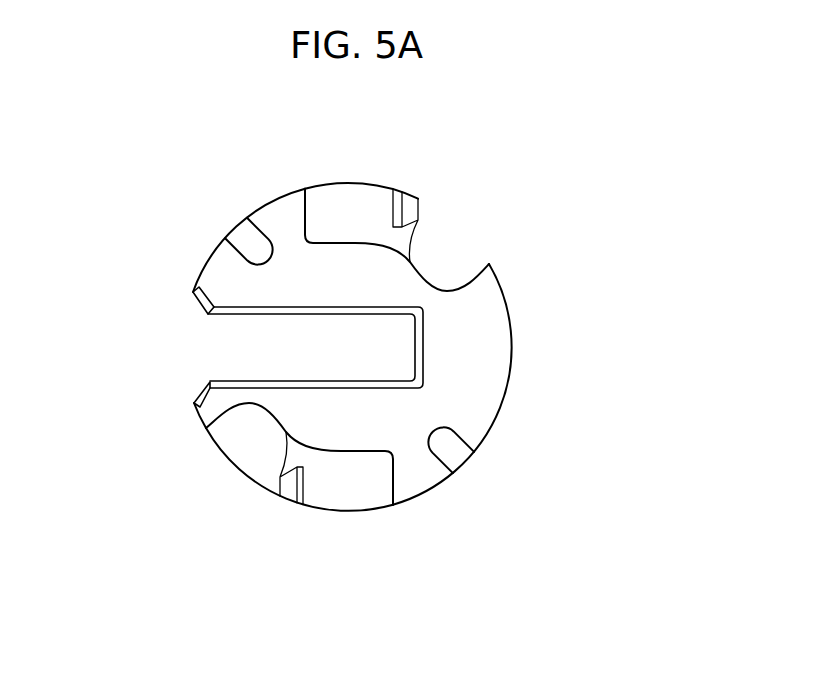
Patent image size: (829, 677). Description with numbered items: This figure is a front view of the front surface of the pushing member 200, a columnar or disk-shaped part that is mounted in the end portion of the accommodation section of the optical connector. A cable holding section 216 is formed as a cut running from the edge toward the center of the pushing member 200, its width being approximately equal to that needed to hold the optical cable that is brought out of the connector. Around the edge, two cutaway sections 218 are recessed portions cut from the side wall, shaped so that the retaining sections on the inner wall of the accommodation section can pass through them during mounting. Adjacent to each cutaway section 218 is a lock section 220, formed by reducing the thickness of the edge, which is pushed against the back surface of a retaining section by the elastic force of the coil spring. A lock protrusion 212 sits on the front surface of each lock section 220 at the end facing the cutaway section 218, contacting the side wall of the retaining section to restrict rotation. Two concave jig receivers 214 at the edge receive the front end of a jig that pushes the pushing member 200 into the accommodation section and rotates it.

The pushing member 200 is at (531, 268).
The lock protrusions 212 is at (410, 207).
The jig receivers 214 is at (248, 252).
The cable holding section 216 is at (238, 340).
The cutaway sections 218 is at (436, 251).
The lock sections 220 is at (335, 213).